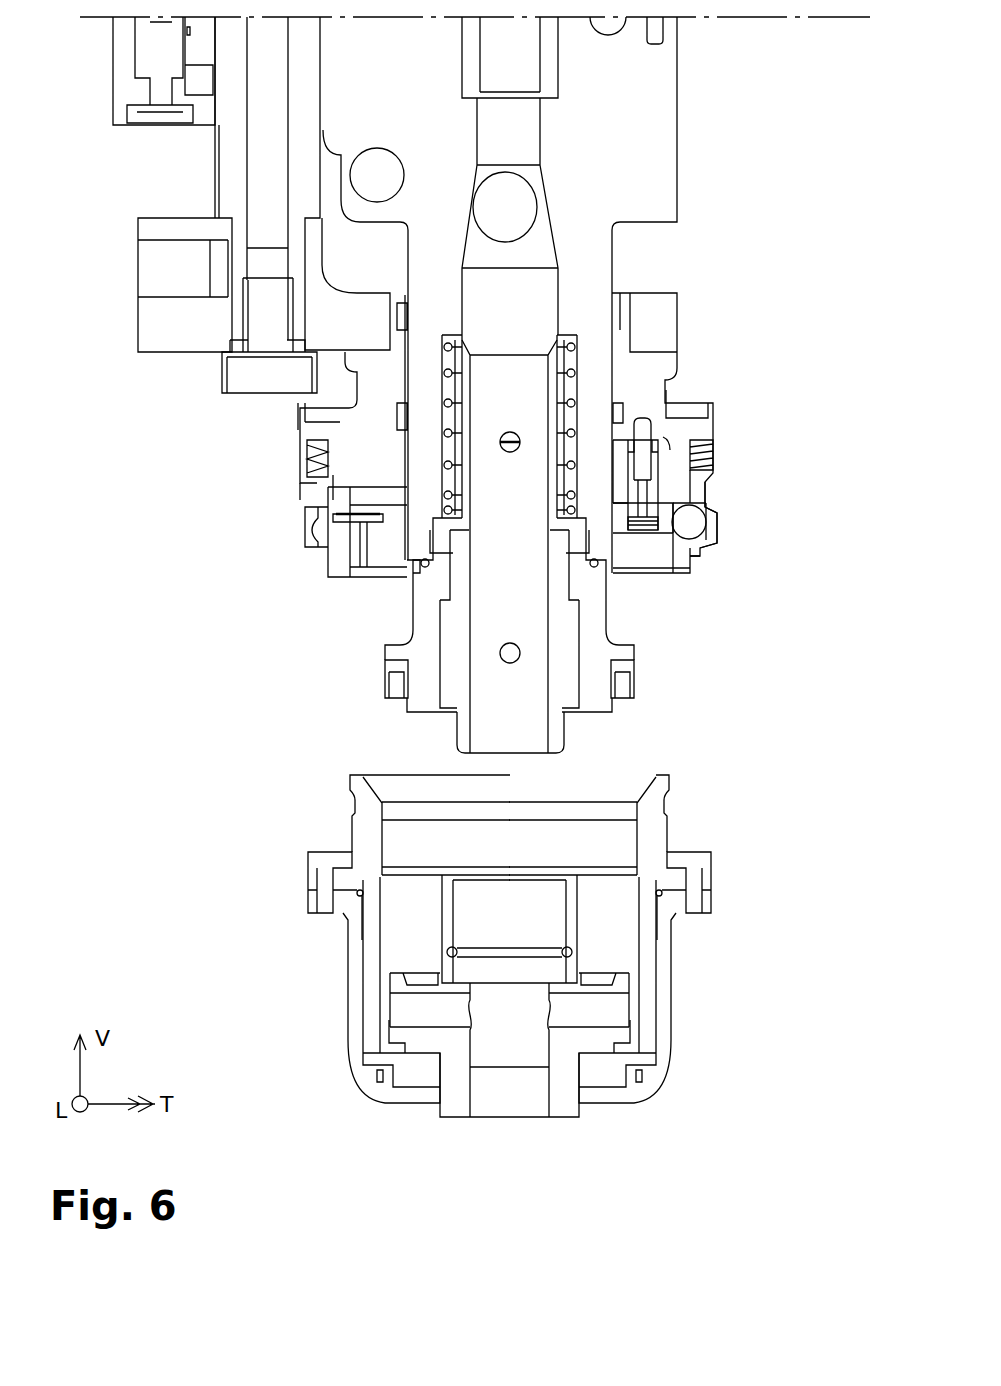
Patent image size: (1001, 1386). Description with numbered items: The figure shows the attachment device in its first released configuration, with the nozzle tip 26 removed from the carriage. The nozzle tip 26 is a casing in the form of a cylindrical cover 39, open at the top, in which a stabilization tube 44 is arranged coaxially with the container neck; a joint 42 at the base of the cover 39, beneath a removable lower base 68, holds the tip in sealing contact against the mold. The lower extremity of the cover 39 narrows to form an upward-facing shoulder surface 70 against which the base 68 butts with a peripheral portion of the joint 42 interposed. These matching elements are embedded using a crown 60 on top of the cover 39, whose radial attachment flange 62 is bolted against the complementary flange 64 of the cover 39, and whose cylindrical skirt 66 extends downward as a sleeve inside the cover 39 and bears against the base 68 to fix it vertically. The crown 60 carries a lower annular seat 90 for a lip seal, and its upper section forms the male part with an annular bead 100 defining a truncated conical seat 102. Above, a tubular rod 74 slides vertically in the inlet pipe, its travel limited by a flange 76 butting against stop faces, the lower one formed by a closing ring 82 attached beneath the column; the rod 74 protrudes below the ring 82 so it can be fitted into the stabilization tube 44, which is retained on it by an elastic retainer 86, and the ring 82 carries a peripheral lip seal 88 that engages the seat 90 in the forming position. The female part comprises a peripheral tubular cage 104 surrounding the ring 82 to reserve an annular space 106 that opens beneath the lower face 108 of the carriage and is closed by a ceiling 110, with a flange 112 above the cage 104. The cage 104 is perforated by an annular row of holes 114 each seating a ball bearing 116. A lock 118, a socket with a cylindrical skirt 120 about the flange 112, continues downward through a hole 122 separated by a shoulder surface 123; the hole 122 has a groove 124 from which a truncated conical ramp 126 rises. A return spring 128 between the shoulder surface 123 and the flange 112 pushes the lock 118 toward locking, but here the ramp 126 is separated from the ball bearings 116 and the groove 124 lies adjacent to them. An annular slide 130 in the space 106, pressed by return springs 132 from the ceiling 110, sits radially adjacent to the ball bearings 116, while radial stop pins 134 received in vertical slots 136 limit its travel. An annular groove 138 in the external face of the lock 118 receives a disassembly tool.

The nozzle tip 26 is at (726, 842).
The cylindrical cover 39 is at (352, 982).
The joint 42 is at (413, 1103).
The stabilization tube 44 is at (562, 1067).
The crown 60 is at (652, 830).
The radial attachment flange 62 is at (312, 880).
The complementary flange 64 is at (713, 903).
The cylindrical skirt 66 is at (370, 935).
The removable lower base 68 is at (413, 1068).
The lower shoulder surface 70 is at (378, 1075).
The tubular rod 74 is at (465, 645).
The flange 76 is at (457, 525).
The closing ring 82 is at (597, 700).
The elastic retainer 86 is at (573, 950).
The peripheral lip seal 88 is at (395, 690).
The lower annular seat 90 is at (385, 845).
The annular bead 100 is at (360, 773).
The truncated conical seat 102 is at (360, 798).
The peripheral tubular cage 104 is at (683, 560).
The annular space 106 is at (665, 493).
The lower face 108 is at (660, 573).
The ceiling 110 is at (668, 453).
The flange 112 is at (697, 427).
The holes 114 is at (705, 540).
The ball bearings 116 is at (690, 523).
The lock 118 is at (305, 493).
The cylindrical skirt 120 is at (303, 437).
The hole 122 is at (333, 515).
The shoulder surface 123 is at (692, 495).
The groove 124 is at (325, 527).
The truncated conical ramp 126 is at (365, 500).
The return spring 128 is at (312, 455).
The annular slide 130 is at (622, 530).
The return springs 132 is at (632, 432).
The radial stop pins 134 is at (367, 490).
The vertical slots 136 is at (318, 505).
The annular groove 138 is at (710, 500).